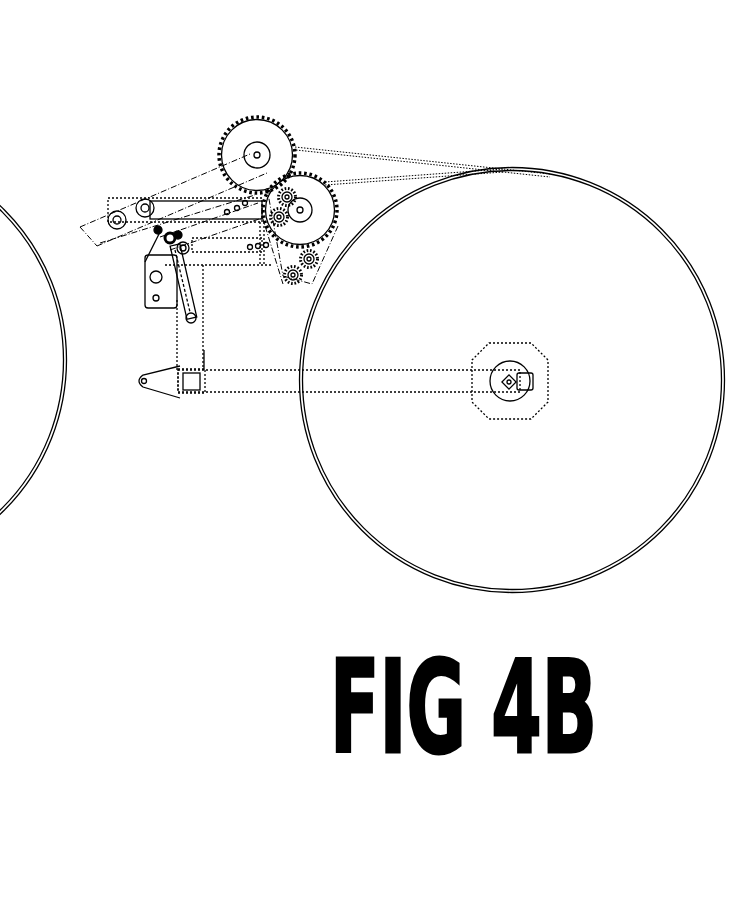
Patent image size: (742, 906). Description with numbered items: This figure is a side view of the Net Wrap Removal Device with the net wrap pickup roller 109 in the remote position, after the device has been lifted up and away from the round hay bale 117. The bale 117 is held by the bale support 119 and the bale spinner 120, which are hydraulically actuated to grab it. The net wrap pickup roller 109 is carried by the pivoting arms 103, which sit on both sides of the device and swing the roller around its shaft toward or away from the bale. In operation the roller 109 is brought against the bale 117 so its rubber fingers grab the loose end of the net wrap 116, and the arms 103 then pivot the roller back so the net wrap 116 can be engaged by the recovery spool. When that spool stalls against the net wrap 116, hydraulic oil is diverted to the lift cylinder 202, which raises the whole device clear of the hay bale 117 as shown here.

The pivoting arms 103 is at (188, 210).
The net wrap pickup roller 109 is at (147, 207).
The net wrap 116 is at (420, 158).
The hay bale 117 is at (390, 503).
The bale support 119 is at (382, 388).
The bale spinner 120 is at (530, 408).
The lift cylinder 202 is at (188, 297).